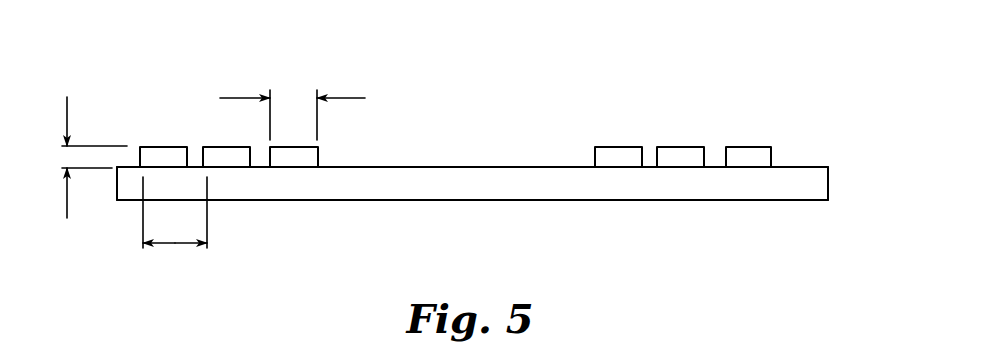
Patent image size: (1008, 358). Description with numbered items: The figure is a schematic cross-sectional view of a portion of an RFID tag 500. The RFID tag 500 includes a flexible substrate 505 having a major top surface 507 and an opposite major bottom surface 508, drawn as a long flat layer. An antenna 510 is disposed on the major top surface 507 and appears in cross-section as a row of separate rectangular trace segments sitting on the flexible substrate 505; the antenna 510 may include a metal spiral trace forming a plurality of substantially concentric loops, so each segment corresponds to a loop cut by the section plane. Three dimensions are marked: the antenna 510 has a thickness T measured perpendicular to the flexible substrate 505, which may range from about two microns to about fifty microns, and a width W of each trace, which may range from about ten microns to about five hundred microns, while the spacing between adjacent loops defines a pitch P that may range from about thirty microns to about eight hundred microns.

The RFID tag 500 is at (765, 52).
The flexible substrate 505 is at (640, 189).
The major top surface 507 is at (433, 166).
The major bottom surface 508 is at (473, 201).
The antenna 510 is at (217, 150).
The thickness T is at (67, 110).
The width W is at (233, 98).
The pitch P is at (173, 243).